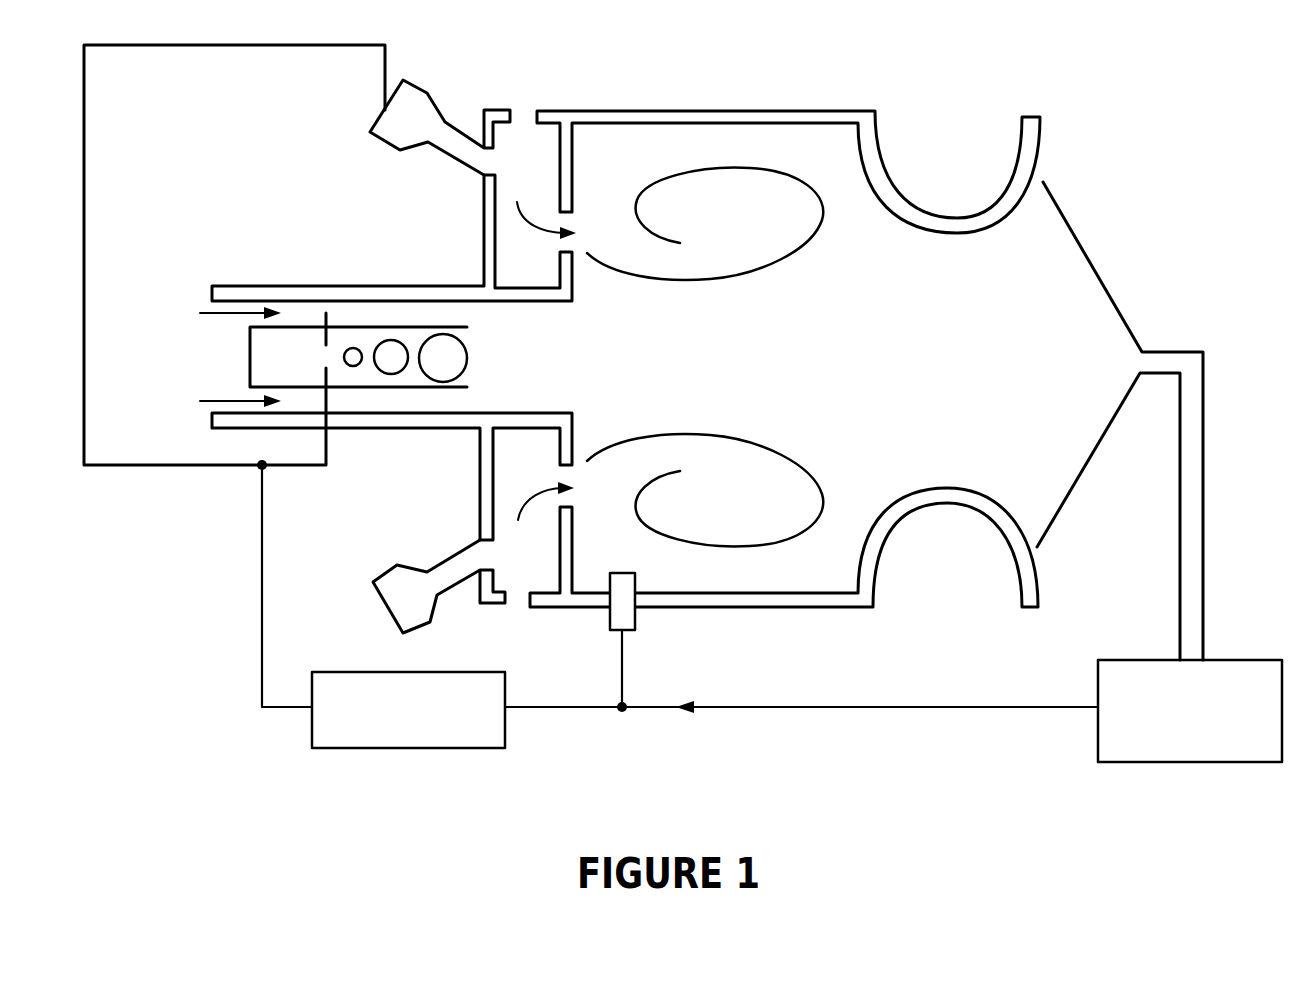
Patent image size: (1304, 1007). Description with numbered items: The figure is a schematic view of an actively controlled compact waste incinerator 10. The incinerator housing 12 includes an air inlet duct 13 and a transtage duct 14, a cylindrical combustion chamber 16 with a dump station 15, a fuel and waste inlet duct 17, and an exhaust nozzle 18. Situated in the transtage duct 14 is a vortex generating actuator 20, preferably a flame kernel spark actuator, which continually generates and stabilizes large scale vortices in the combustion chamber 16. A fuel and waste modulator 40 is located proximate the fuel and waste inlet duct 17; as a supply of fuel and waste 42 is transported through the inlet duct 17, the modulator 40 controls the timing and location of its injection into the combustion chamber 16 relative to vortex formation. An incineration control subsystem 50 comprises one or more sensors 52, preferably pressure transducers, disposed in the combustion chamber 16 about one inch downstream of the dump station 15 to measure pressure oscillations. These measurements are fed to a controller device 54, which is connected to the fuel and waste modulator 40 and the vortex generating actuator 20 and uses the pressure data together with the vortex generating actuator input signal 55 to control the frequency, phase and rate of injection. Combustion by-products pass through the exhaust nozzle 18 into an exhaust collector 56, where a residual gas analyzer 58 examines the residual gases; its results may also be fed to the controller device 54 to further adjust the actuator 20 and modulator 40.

The actively controlled compact incinerator 10 is at (226, 556).
The incinerator housing 12 is at (630, 110).
The air inlet duct 13 is at (203, 297).
The transtage duct 14 is at (392, 354).
The dump station 15 is at (550, 413).
The cylindrical combustion chamber 16 is at (712, 378).
The fuel and waste inlet duct 17 is at (540, 273).
The exhaust nozzle 18 is at (957, 397).
The vortex generating actuator 20 is at (448, 388).
The fuel and waste modulator 40 is at (418, 85).
The fuel and waste supply 42 is at (525, 142).
The incineration control subsystem 50 is at (797, 706).
The sensor 52 is at (636, 620).
The controller device 54 is at (468, 672).
The vortex generating actuator input signal 55 is at (268, 473).
The exhaust collector 56 is at (1090, 252).
The residual gas analyzer 58 is at (1142, 660).